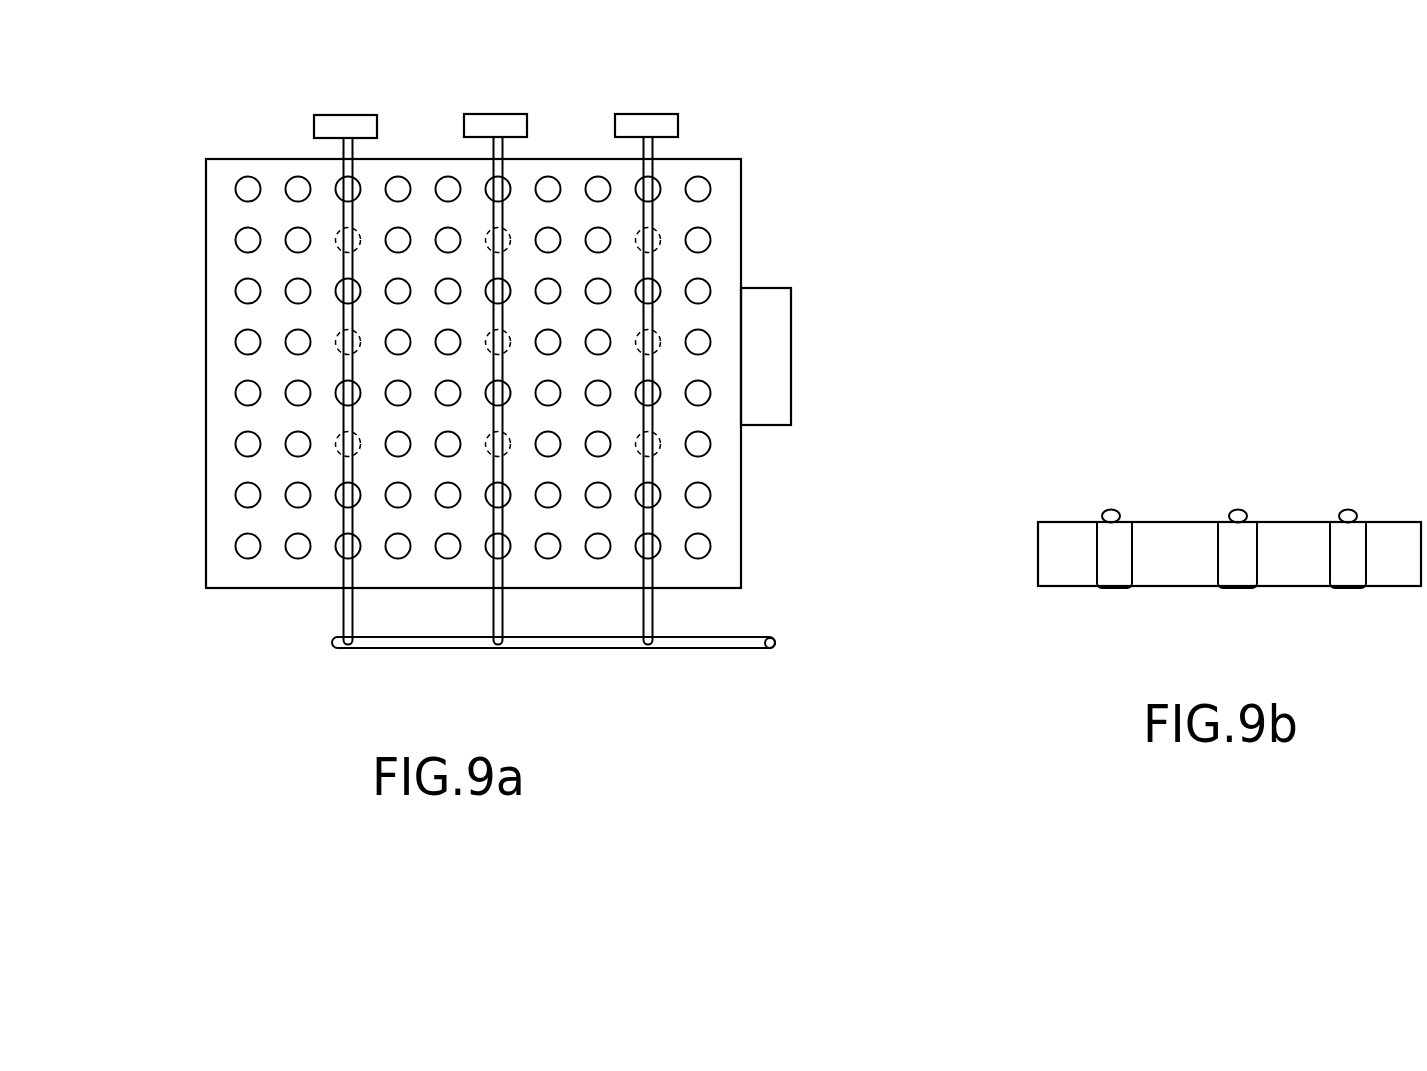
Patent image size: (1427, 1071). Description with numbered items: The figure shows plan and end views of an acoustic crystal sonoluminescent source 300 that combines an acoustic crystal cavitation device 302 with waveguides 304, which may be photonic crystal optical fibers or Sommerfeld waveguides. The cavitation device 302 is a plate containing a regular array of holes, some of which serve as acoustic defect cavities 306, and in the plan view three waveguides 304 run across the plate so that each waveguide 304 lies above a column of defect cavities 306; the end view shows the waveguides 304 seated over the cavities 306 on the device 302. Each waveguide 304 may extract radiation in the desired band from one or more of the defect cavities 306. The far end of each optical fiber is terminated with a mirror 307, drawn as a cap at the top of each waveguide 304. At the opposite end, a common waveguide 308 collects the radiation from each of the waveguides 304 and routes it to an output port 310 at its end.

In FIG. 9a, the acoustic crystal sonoluminescent source 300 is at (815, 238).
In FIG. 9a, the acoustic crystal cavitation device 302 is at (202, 425).
In FIG. 9b, the acoustic crystal cavitation device 302 is at (1038, 562).
In FIG. 9a, the waveguide 304 is at (345, 558).
In FIG. 9b, the waveguide 304 is at (1103, 503).
In FIG. 9a, the acoustic defect cavity 306 is at (345, 338).
In FIG. 9b, the acoustic defect cavity 306 is at (1113, 578).
In FIG. 9a, the mirror 307 is at (352, 115).
In FIG. 9a, the common waveguide 308 is at (533, 648).
In FIG. 9a, the output port 310 is at (773, 650).